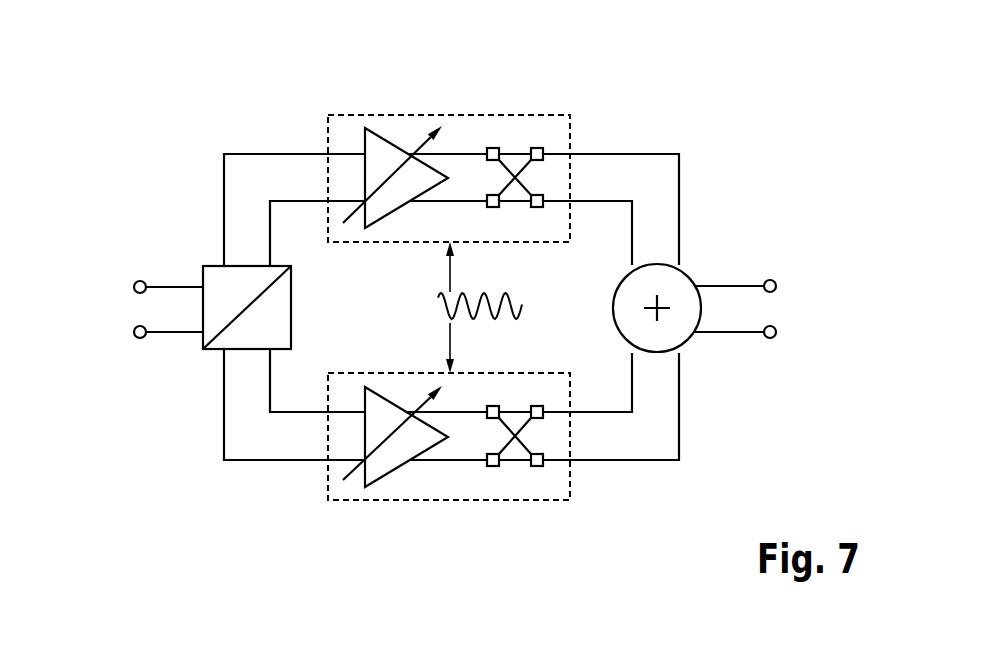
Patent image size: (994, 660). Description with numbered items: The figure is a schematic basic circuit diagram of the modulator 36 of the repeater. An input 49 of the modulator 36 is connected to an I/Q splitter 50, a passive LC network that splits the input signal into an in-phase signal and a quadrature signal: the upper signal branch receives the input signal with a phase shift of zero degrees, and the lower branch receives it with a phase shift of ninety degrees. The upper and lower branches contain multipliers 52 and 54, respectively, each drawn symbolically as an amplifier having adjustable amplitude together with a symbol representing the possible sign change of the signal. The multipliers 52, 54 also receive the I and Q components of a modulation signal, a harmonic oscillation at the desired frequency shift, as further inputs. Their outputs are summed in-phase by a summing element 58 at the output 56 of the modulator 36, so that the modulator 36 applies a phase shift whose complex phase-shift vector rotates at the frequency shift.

The modulator 36 is at (734, 71).
The input 49 is at (113, 248).
The I/Q splitter 50 is at (291, 312).
The multiplier 52 is at (495, 115).
The multiplier 54 is at (430, 500).
The output 56 is at (799, 272).
The summing element 58 is at (614, 309).